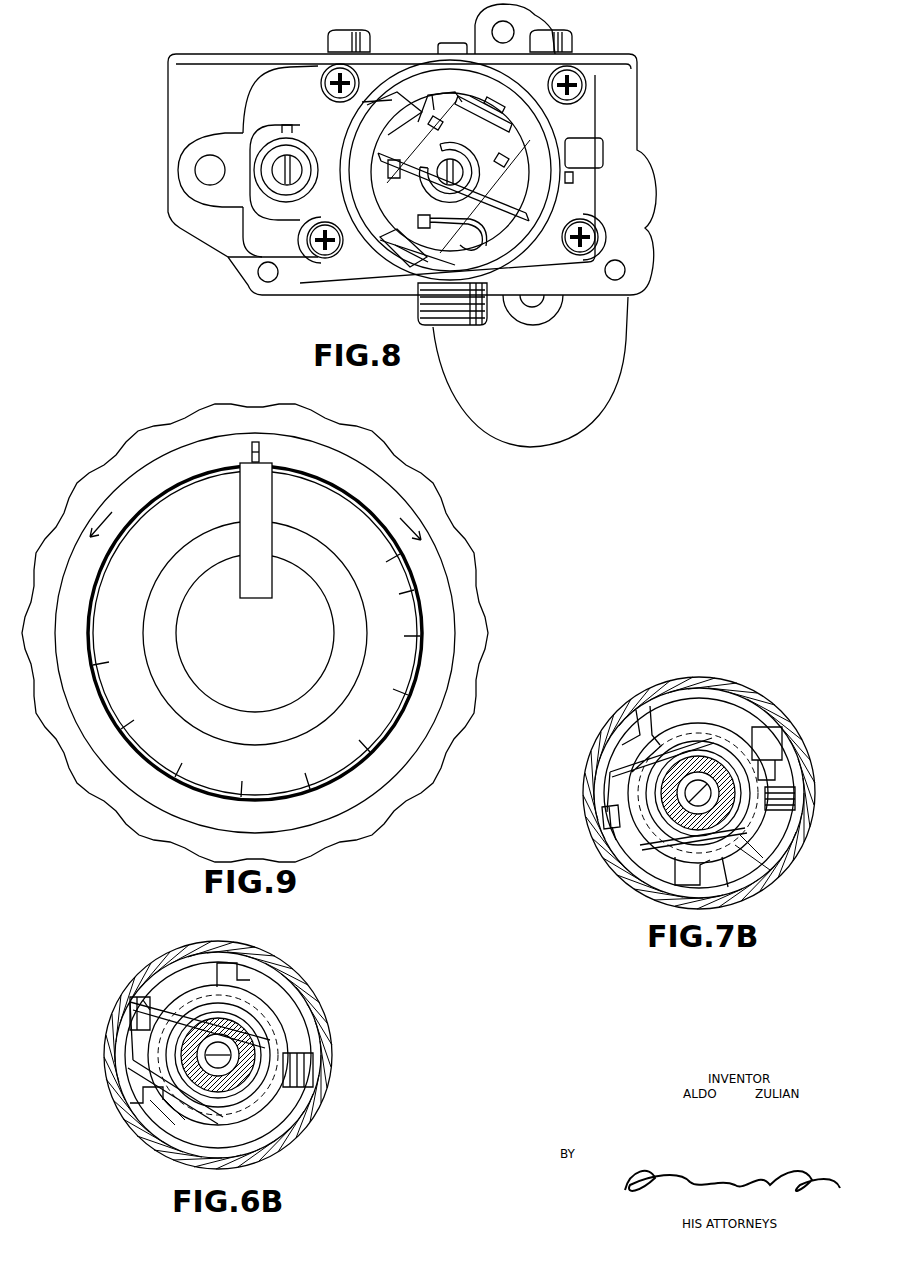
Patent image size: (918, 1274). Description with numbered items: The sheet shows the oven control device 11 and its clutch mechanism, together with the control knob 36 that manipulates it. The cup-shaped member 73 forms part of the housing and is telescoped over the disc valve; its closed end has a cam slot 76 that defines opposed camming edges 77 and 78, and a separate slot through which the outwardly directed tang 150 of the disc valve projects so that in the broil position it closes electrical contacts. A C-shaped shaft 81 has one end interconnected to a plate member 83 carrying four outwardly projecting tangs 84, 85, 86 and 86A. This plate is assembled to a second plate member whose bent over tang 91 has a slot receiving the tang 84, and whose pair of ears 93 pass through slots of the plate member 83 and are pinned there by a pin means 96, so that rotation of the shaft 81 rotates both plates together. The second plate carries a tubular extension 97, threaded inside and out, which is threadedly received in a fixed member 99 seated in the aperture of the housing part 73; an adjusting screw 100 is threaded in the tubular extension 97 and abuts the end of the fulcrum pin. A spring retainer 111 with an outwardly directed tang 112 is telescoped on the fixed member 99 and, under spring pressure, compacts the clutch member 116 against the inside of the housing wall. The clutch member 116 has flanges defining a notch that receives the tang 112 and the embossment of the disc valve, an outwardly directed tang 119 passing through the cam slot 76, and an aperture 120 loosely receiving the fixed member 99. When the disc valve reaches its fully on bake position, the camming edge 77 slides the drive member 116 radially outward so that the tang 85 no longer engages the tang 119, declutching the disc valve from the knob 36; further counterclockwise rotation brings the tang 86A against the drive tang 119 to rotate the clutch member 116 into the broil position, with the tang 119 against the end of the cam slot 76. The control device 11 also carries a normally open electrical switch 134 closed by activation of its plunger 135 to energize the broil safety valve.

In FIG. 8, the control device 11 is at (613, 33).
In FIG. 9, the control knob 36 is at (186, 494).
In FIG. 7B, the cup-shaped member 73 is at (727, 687).
In FIG. 6B, the cup-shaped member 73 is at (293, 973).
In FIG. 8, the cam slot 76 is at (373, 233).
In FIG. 8, the camming edge 77 is at (393, 233).
In FIG. 8, the camming edge 78 is at (362, 150).
In FIG. 8, the C-shaped shaft 81 is at (466, 153).
In FIG. 8, the plate member 83 is at (520, 213).
In FIG. 8, the tang 84 is at (497, 97).
In FIG. 8, the tang 85 is at (433, 97).
In FIG. 8, the tang 86 is at (404, 84).
In FIG. 8, the tang 86A is at (396, 272).
In FIG. 8, the bent over tang 91 is at (503, 116).
In FIG. 8, the ears 93 is at (413, 153).
In FIG. 8, the pin means 96 is at (382, 173).
In FIG. 7B, the tubular extension 97 is at (677, 783).
In FIG. 6B, the tubular extension 97 is at (223, 1073).
In FIG. 7B, the fixed member 99 is at (692, 760).
In FIG. 6B, the fixed member 99 is at (230, 1020).
In FIG. 7B, the adjusting screw 100 is at (690, 790).
In FIG. 6B, the adjusting screw 100 is at (210, 1017).
In FIG. 7B, the spring retainer 111 is at (757, 857).
In FIG. 6B, the spring retainer 111 is at (163, 1117).
In FIG. 7B, the tang 112 is at (602, 812).
In FIG. 6B, the tang 112 is at (143, 1000).
In FIG. 7B, the clutch member 116 is at (753, 717).
In FIG. 6B, the clutch member 116 is at (270, 1018).
In FIG. 8, the tang 119 is at (427, 260).
In FIG. 7B, the tang 119 is at (605, 830).
In FIG. 6B, the tang 119 is at (150, 1010).
In FIG. 7B, the aperture 120 is at (743, 810).
In FIG. 6B, the aperture 120 is at (273, 1048).
In FIG. 8, the electrical switch 134 is at (603, 150).
In FIG. 8, the plunger 135 is at (573, 175).
In FIG. 8, the tang 150 is at (573, 183).